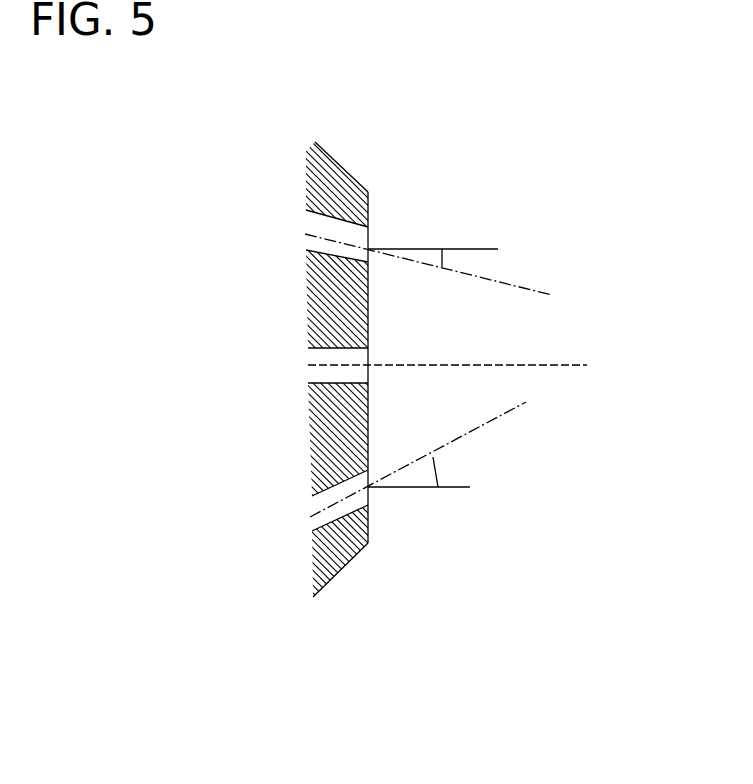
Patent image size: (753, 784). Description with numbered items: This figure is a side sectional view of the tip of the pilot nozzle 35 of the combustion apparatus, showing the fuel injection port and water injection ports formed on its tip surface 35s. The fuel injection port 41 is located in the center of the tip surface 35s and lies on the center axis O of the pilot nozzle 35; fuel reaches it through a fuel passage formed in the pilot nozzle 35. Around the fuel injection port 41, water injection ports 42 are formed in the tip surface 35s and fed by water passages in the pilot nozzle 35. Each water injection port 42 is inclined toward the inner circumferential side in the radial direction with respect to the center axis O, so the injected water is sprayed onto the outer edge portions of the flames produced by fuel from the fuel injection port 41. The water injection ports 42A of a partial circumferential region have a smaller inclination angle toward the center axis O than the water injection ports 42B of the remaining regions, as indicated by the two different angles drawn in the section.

The pilot nozzle 35 is at (341, 163).
The tip surface 35s is at (369, 195).
The water injection port 42 is at (429, 362).
The water injection port of partial region 42A is at (370, 232).
The water injection port of remaining region 42B is at (370, 495).
The fuel injection port 41 is at (366, 357).
The center axis O is at (518, 365).